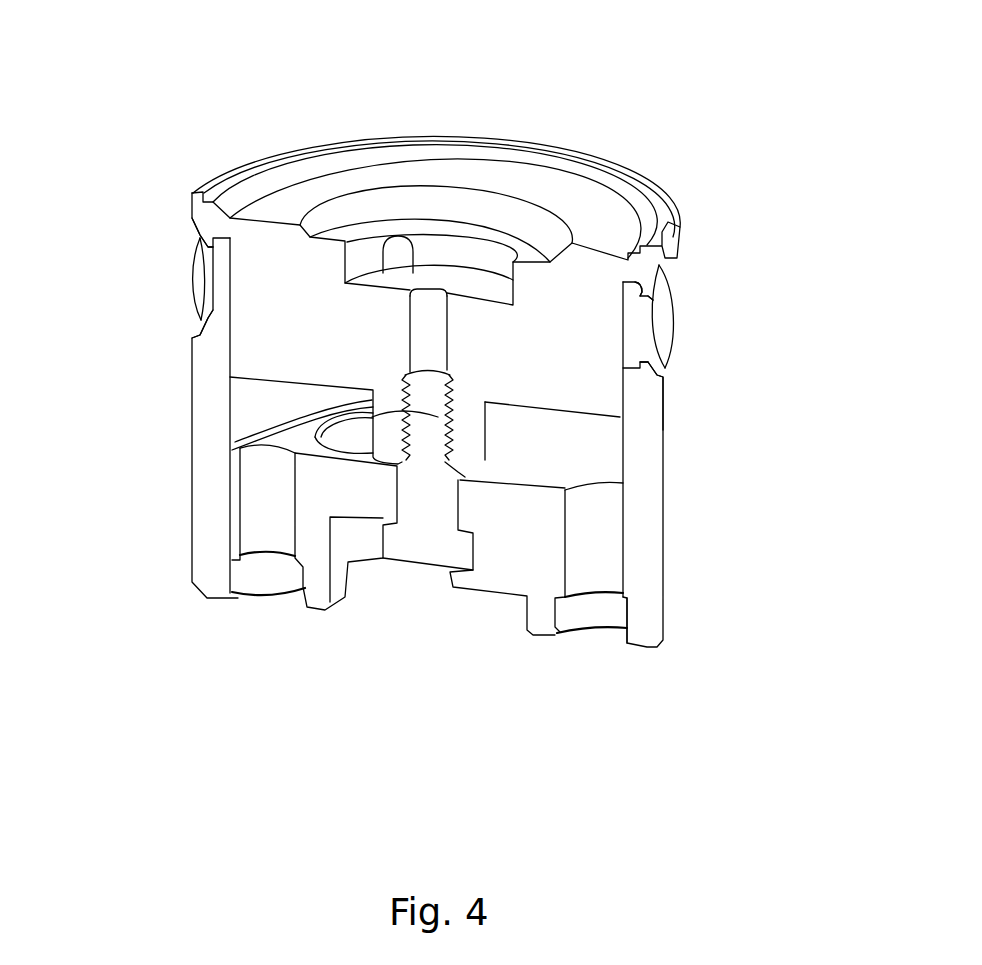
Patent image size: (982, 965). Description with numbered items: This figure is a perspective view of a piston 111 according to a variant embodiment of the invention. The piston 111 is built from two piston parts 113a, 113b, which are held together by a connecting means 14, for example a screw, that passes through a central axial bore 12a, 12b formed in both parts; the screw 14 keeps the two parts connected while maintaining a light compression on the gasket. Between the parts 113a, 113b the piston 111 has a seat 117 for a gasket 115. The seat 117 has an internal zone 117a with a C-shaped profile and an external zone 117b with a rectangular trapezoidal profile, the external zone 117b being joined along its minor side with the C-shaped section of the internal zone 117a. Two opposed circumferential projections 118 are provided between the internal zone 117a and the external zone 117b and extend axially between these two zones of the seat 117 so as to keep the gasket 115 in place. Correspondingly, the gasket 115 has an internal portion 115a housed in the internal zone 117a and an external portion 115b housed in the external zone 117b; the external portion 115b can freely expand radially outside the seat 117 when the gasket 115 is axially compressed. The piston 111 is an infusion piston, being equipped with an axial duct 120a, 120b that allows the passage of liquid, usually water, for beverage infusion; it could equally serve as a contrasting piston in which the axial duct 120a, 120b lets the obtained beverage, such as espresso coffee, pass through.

The piston 111 is at (638, 683).
The piston part 113a is at (325, 332).
The piston part 113b is at (559, 523).
The axial duct 120a is at (405, 258).
The axial duct 120b is at (357, 443).
The central axial bore 12a is at (427, 328).
The central axial bore 12b is at (460, 475).
The connecting means 14 is at (338, 440).
The gasket 115 is at (213, 290).
The internal portion of gasket 115a is at (223, 313).
The external portion of gasket 115b is at (207, 292).
The seat 117 is at (623, 330).
The internal zone of seat 117a is at (623, 317).
The external zone of seat 117b is at (655, 373).
The circumferential projections 118 is at (655, 316).